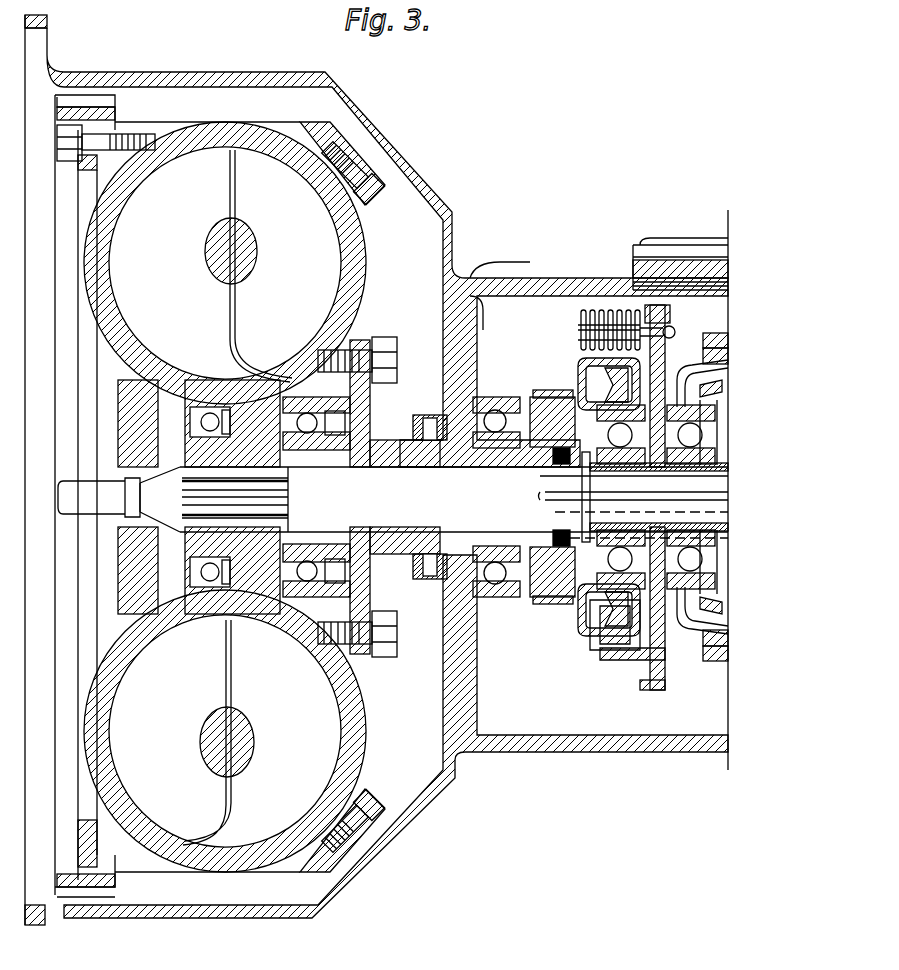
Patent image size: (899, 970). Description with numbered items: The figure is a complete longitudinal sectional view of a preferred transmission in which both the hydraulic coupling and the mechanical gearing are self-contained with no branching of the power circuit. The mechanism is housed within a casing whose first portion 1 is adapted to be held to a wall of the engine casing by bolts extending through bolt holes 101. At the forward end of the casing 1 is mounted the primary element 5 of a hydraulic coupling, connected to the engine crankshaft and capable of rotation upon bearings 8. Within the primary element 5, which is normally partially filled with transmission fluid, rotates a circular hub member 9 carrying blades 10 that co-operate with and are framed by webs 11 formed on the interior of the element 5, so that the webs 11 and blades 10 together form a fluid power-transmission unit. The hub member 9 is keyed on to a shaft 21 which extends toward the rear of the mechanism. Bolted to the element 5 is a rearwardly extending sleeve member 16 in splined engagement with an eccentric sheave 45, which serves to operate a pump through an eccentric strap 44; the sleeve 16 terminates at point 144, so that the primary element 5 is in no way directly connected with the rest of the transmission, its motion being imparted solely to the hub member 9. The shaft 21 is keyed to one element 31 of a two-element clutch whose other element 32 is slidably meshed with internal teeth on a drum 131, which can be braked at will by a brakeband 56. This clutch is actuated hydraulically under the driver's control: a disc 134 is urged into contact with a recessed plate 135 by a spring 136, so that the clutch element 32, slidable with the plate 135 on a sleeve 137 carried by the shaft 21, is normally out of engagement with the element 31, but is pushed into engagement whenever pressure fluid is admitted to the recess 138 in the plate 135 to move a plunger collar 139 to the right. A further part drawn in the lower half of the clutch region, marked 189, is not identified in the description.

The first portion of casing 1 is at (447, 246).
The bolt holes 101 is at (36, 46).
The primary element 5 is at (180, 135).
The blades 10 is at (185, 309).
The webs 11 is at (298, 236).
The hub member 9 is at (243, 392).
The bearings 8 is at (322, 417).
The sleeve member 16 is at (386, 456).
The shaft 21 is at (446, 512).
The eccentric strap 44 is at (475, 407).
The eccentric sheave 45 is at (547, 420).
The recess 138 is at (590, 404).
The spring 136 is at (600, 330).
The plunger collar 139 is at (614, 330).
The disc 134 is at (656, 338).
The sleeve 137 is at (580, 462).
The point 144 is at (582, 474).
The clutch element 32 is at (690, 383).
The brakeband 56 is at (716, 337).
The drum 131 is at (724, 360).
The clutch element 31 is at (722, 388).
The recessed plate 135 is at (590, 350).
The lever bracket 189 is at (620, 628).